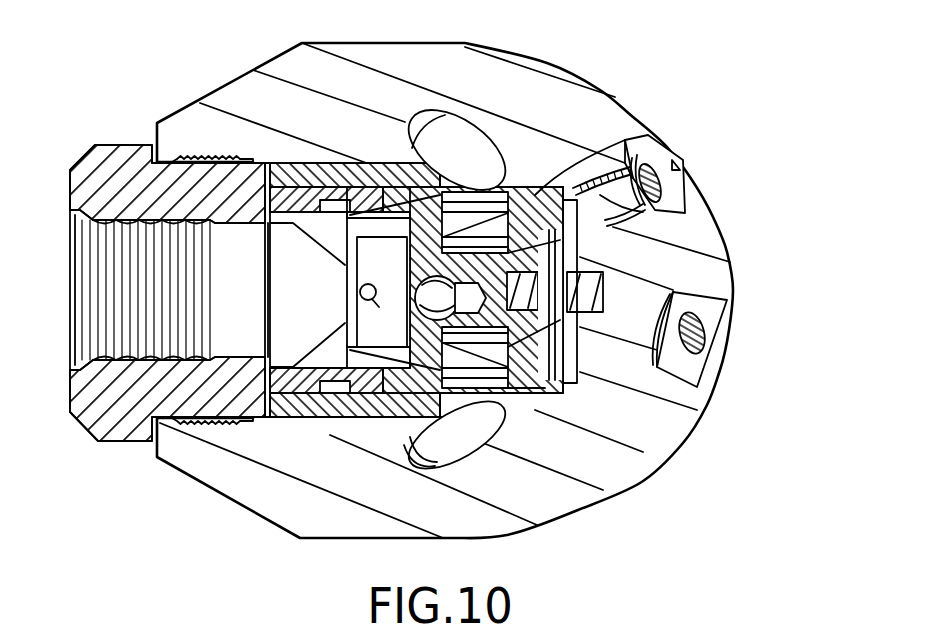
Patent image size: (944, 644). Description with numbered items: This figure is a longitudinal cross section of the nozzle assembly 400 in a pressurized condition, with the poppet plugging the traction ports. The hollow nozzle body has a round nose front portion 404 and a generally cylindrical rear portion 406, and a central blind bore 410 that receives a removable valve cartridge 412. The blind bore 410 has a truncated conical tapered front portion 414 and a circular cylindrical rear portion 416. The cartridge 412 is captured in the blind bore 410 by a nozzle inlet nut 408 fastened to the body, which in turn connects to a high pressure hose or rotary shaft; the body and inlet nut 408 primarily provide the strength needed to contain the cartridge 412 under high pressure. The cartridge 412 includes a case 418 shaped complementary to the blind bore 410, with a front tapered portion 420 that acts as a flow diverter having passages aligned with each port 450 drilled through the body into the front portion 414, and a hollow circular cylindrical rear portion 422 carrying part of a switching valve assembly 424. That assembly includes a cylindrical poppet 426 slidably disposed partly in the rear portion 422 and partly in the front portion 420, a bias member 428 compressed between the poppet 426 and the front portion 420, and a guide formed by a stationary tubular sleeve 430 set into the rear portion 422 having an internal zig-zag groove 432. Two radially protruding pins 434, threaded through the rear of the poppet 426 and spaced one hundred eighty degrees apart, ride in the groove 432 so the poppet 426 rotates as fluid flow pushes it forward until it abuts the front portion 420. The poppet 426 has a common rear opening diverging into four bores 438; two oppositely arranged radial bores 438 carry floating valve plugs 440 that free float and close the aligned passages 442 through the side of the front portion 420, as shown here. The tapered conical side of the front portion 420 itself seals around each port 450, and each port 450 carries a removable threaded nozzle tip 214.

The nozzle assembly 400 is at (714, 100).
The round nose front portion 404 is at (628, 113).
The generally cylindrical rear portion 406 is at (316, 55).
The nozzle inlet nut 408 is at (101, 150).
The central blind bore 410 is at (378, 170).
The removable valve cartridge 412 is at (546, 170).
The truncated conical tapered front portion 414 is at (508, 392).
The circular cylindrical rear portion 416 is at (312, 408).
The case 418 is at (294, 153).
The front tapered portion 420 is at (434, 182).
The hollow circular cylindrical rear portion 422 is at (357, 195).
The switching valve assembly 424 is at (539, 208).
The cylindrical poppet 426 is at (392, 172).
The bias member 428 is at (600, 308).
The stationary tubular sleeve 430 is at (314, 190).
The internal zig-zag groove 432 is at (303, 353).
The radially protruding pins 434 is at (393, 282).
The bores 438 is at (447, 338).
The floating valve plugs 440 is at (493, 228).
The passages 442 is at (490, 153).
The port 450 is at (490, 150).
The removable threaded nozzle tip 214 is at (655, 165).